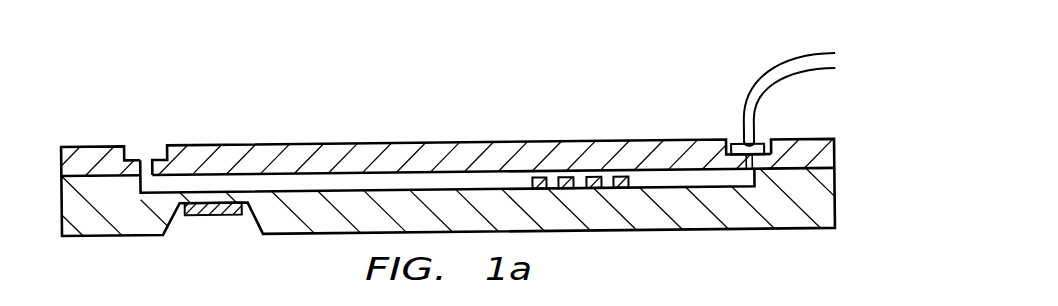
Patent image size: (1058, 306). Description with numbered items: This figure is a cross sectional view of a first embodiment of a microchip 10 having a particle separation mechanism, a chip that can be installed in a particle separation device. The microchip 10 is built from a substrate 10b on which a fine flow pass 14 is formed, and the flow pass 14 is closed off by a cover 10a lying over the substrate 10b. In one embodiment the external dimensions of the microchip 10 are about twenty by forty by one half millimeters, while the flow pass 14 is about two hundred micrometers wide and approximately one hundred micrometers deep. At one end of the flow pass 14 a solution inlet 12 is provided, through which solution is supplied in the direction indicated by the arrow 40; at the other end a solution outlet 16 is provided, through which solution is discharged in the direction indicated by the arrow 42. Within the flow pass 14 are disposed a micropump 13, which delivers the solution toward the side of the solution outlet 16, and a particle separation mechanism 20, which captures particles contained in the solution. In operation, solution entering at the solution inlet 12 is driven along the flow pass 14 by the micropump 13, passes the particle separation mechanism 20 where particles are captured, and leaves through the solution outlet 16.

The microchip 10 is at (520, 79).
The cover 10a is at (68, 147).
The substrate 10b is at (835, 191).
The solution inlet 12 is at (166, 129).
The micropump 13 is at (213, 219).
The fine flow pass 14 is at (415, 184).
The solution outlet 16 is at (743, 155).
The particle separation mechanism 20 is at (547, 182).
The arrow 40 is at (145, 120).
The arrow 42 is at (872, 69).